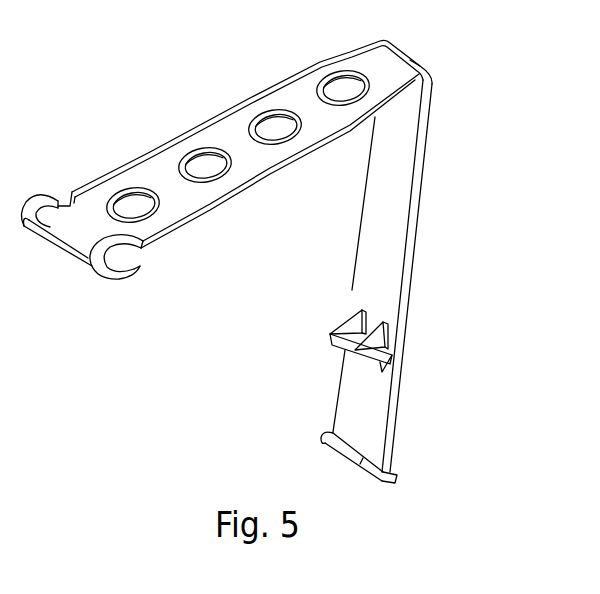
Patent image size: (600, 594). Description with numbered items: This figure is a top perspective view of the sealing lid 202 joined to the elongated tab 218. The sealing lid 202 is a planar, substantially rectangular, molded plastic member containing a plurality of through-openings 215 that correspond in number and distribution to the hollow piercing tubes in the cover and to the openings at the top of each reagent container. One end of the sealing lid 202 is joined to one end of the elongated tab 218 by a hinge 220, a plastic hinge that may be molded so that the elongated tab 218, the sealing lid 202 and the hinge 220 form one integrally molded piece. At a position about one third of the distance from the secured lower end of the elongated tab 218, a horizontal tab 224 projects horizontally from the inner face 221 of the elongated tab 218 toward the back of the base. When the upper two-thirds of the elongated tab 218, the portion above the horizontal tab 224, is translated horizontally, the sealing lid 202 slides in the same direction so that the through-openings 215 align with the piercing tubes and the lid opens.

The sealing lid 202 is at (87, 198).
The through-openings 215 is at (133, 203).
The elongated tab 218 is at (423, 213).
The hinge 220 is at (422, 64).
The inner face 221 is at (364, 232).
The horizontal tab 224 is at (330, 345).